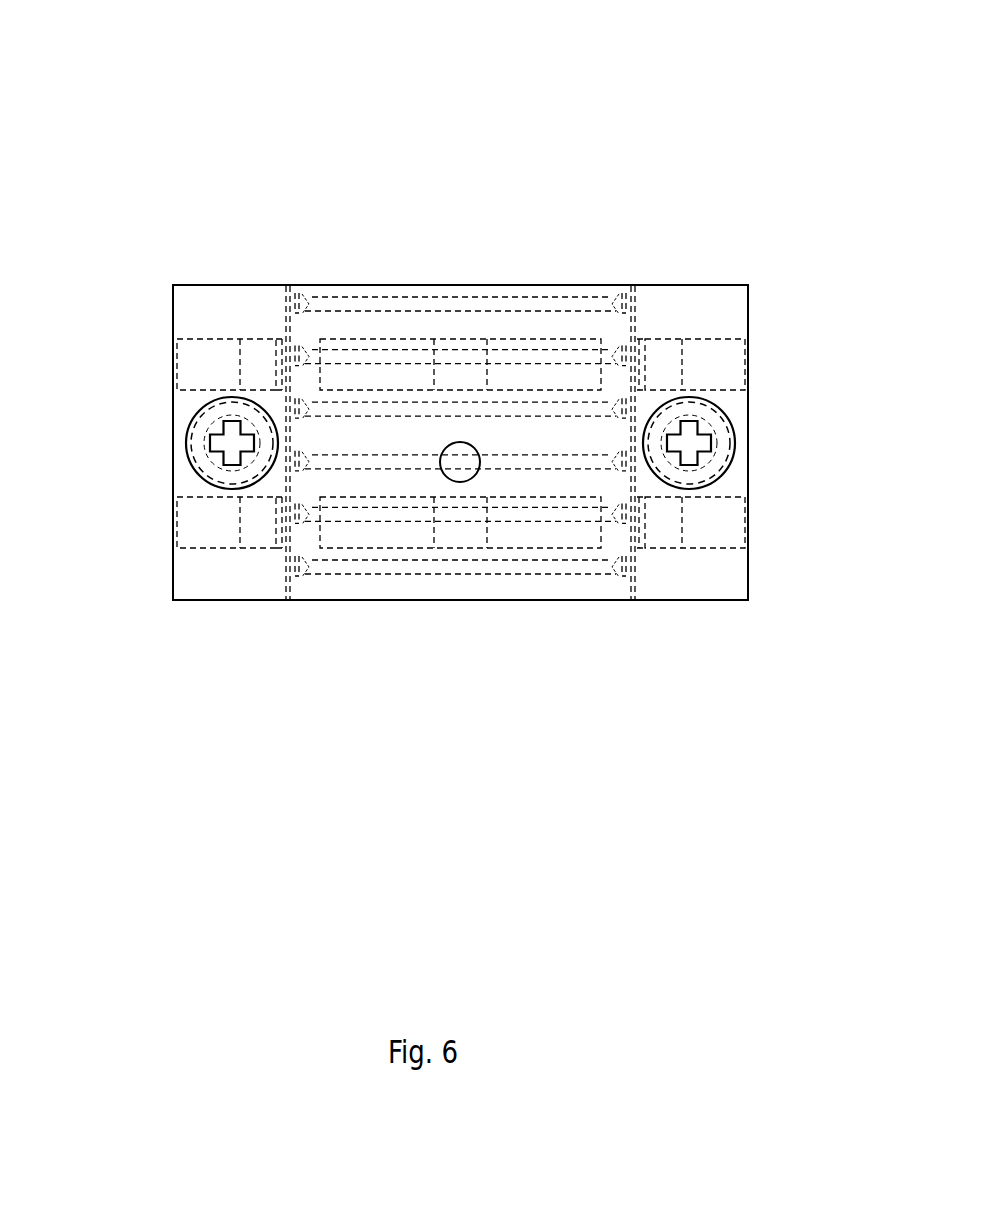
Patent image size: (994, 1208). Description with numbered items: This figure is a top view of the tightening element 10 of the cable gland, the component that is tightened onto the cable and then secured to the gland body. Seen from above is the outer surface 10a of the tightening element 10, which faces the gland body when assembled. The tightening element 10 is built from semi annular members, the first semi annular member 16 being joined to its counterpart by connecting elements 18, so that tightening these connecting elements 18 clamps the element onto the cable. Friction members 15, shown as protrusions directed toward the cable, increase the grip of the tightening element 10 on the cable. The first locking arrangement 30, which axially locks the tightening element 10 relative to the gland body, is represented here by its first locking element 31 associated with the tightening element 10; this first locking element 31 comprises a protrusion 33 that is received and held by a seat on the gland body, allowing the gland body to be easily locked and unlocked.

The tightening element 10 is at (231, 205).
The outer surface 10a is at (263, 600).
The friction members 15 is at (308, 400).
The first semi annular member 16 is at (446, 300).
The connecting elements 18 is at (232, 480).
The first locking arrangement 30 is at (472, 500).
The first locking element 31 is at (456, 478).
The protrusion 33 is at (455, 458).